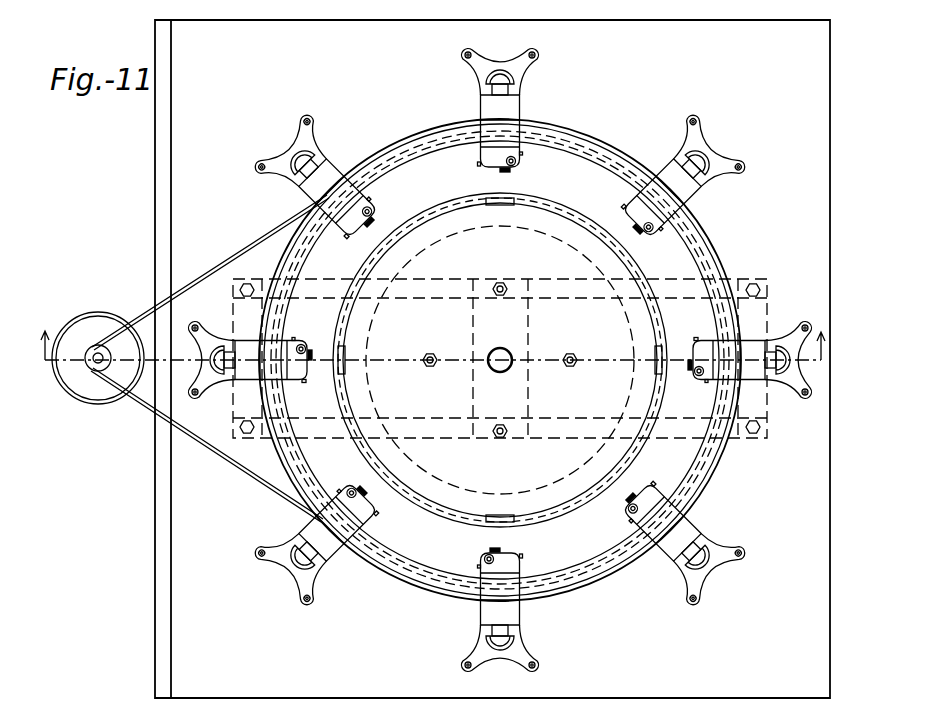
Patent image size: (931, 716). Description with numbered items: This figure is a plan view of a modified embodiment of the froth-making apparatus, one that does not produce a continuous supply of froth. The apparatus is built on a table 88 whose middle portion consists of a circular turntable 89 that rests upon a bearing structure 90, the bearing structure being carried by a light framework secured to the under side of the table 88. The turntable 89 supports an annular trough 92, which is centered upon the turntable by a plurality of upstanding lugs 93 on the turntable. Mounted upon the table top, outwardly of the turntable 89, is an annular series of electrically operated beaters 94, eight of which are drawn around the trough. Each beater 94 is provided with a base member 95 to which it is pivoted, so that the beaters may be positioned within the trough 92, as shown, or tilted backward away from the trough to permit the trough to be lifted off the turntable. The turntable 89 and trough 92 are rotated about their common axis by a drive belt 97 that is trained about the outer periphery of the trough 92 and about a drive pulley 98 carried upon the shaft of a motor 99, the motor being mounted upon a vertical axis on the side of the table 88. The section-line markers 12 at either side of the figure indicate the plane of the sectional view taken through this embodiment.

The table 88 is at (172, 577).
The circular turntable 89 is at (458, 487).
The bearing structure 90 is at (573, 498).
The annular trough 92 is at (693, 463).
The upstanding lugs 93 is at (503, 205).
The electrically operated beaters 94 is at (493, 140).
The base member 95 is at (527, 67).
The drive belt 97 is at (205, 450).
The drive pulley 98 is at (90, 368).
The motor 99 is at (101, 396).
The section line 12 is at (436, 335).